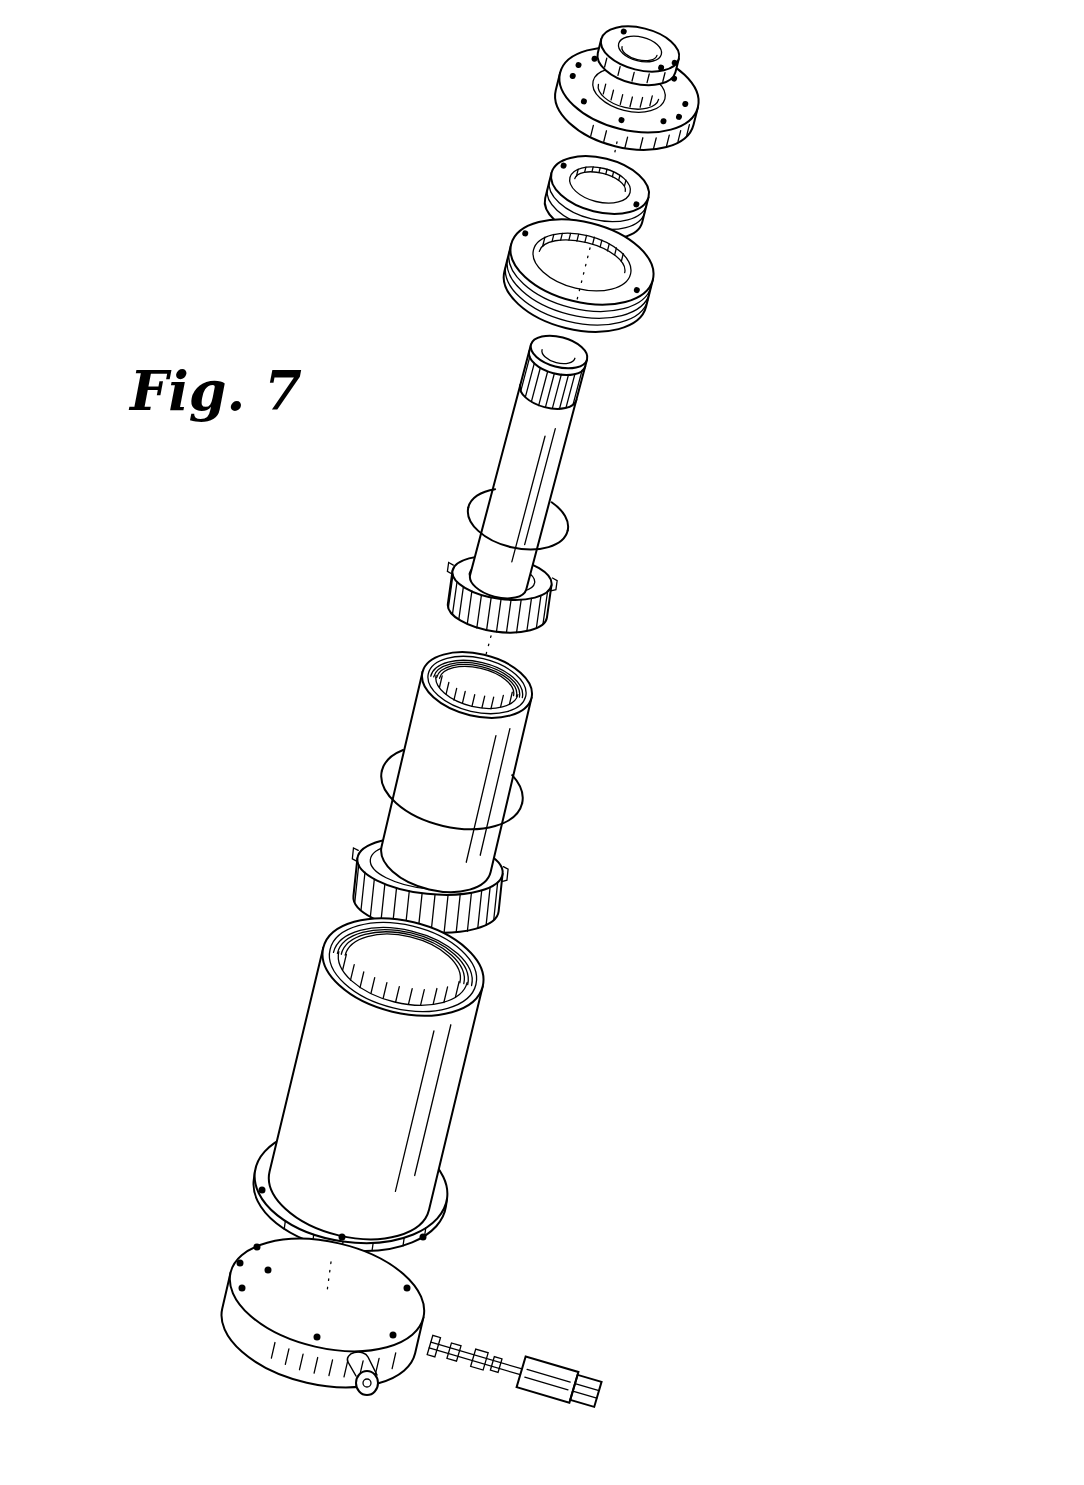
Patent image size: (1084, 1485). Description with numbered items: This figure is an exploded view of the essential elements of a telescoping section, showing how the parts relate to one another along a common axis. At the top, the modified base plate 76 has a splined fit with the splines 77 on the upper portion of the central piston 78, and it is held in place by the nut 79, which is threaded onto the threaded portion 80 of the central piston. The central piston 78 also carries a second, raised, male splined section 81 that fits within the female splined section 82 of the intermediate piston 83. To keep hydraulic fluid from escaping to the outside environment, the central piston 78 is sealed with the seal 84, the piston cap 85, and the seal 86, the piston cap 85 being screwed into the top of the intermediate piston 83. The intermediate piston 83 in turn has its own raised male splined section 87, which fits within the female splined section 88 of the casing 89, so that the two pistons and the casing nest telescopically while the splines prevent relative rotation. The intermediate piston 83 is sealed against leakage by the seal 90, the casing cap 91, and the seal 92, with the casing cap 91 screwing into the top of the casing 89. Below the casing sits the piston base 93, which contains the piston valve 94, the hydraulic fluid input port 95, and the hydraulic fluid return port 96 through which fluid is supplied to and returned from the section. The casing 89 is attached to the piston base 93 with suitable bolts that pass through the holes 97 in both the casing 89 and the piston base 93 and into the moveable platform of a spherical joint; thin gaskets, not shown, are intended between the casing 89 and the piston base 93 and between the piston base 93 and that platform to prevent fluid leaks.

The modified base plate 76 is at (570, 105).
The splines 77 is at (588, 396).
The central piston 78 is at (550, 480).
The nut 79 is at (682, 50).
The threaded portion of the central piston 80 is at (590, 360).
The second raised male splined section 81 is at (450, 592).
The female splined section 82 is at (532, 710).
The intermediate piston 83 is at (430, 752).
The seal 84 is at (565, 540).
The piston cap 85 is at (552, 210).
The seal 86 is at (652, 188).
The raised male splined section 87 is at (362, 882).
The female splined section 88 is at (402, 1001).
The casing 89 is at (330, 1085).
The seal 90 is at (524, 808).
The casing cap 91 is at (512, 298).
The seal 92 is at (632, 262).
The piston base 93 is at (257, 1335).
The piston valve 94 is at (548, 1375).
The hydraulic fluid input port 95 is at (407, 1268).
The hydraulic fluid return port 96 is at (379, 1389).
The holes 97 is at (393, 1335).